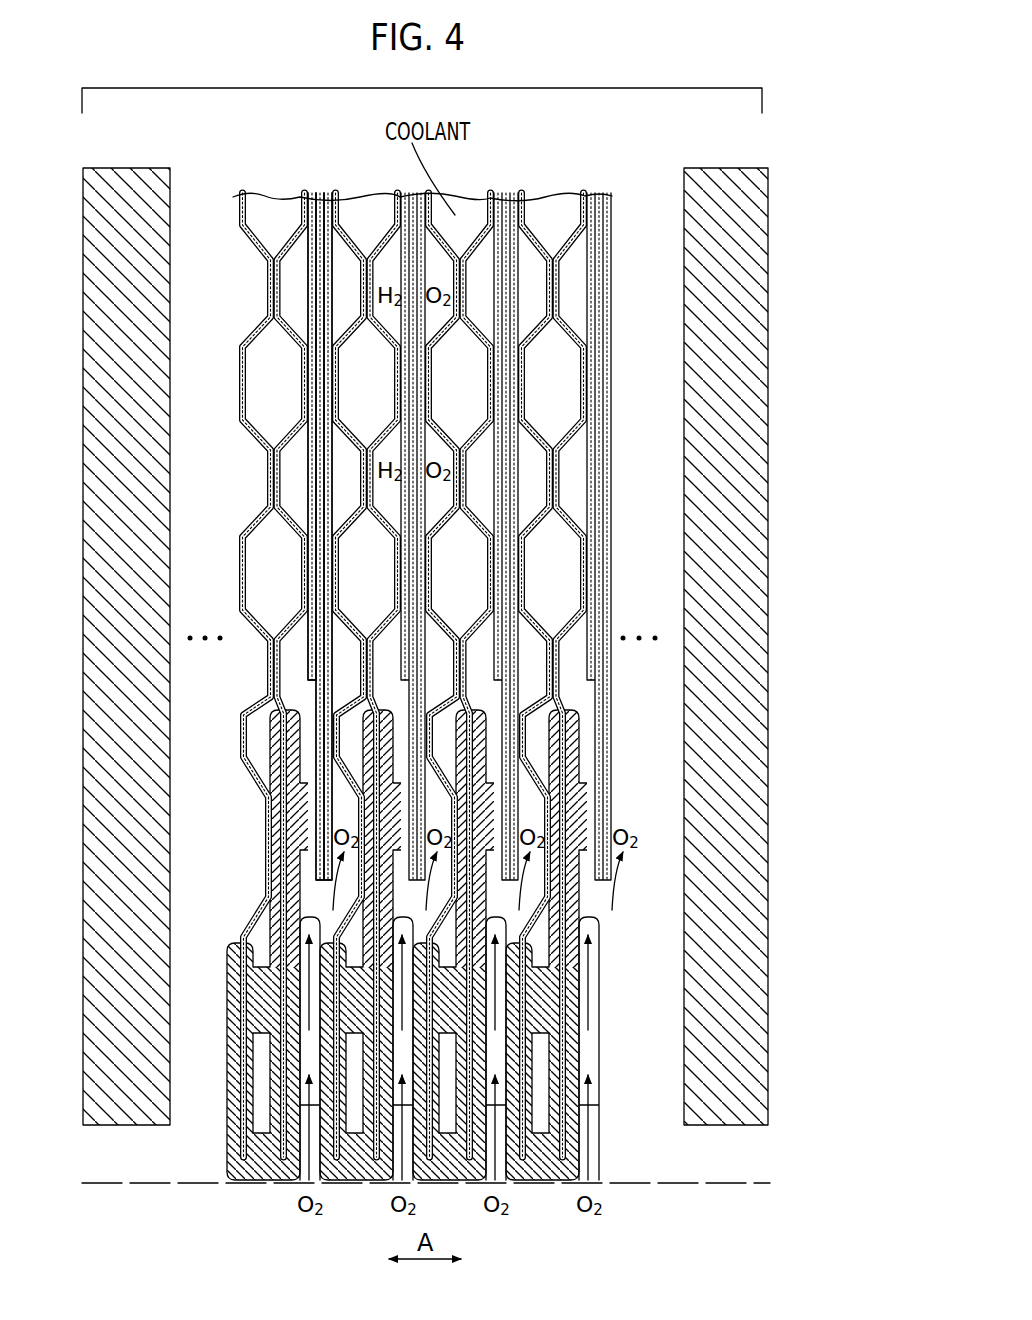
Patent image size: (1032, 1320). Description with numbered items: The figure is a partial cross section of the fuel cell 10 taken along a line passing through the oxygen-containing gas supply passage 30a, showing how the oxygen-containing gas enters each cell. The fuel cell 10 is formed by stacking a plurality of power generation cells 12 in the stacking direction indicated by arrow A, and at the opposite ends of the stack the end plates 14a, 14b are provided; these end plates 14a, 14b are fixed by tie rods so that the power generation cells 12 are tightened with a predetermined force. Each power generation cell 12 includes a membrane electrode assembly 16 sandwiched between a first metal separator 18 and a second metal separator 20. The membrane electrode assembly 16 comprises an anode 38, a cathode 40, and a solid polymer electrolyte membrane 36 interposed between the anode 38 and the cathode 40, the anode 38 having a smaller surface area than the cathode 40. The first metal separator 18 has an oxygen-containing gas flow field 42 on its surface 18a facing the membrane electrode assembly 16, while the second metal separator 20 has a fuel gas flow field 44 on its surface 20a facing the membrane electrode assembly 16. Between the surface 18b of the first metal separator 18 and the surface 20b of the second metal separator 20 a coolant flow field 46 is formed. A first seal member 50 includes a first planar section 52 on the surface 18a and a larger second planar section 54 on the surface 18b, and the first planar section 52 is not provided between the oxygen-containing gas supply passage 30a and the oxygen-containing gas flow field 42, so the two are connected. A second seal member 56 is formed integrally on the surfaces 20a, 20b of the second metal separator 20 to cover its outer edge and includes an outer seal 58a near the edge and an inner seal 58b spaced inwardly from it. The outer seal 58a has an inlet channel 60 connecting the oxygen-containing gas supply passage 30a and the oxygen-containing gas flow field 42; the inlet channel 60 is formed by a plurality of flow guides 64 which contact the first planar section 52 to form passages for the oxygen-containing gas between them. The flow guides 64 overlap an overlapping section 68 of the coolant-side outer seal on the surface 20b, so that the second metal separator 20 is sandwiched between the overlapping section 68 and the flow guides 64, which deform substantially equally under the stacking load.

The fuel cell 10 is at (206, 131).
The power generation cell 12 is at (501, 189).
The end plate 14a is at (143, 1127).
The end plate 14b is at (700, 1127).
The membrane electrode assembly 16 is at (358, 142).
The first metal separator 18 is at (420, 381).
The surface of first metal separator 18a is at (350, 424).
The surface of first metal separator 18b is at (336, 374).
The second metal separator 20 is at (300, 220).
The surface of second metal separator 20a is at (313, 396).
The surface of second metal separator 20b is at (305, 372).
The oxygen-containing gas supply passage 30a is at (622, 1184).
The solid polymer electrolyte membrane 36 is at (320, 194).
The anode 38 is at (311, 194).
The cathode 40 is at (328, 194).
The oxygen-containing gas flow field 42 is at (344, 308).
The fuel gas flow field 44 is at (292, 308).
The coolant flow field 46 is at (505, 481).
The first seal member 50 is at (225, 1068).
The first planar section 52 is at (585, 1100).
The second planar section 54 is at (550, 1050).
The second seal member 56 is at (568, 1190).
The outer seal 58a is at (640, 1016).
The inner seal 58b is at (601, 812).
The inlet channel 60 is at (606, 960).
The flow guides 64 is at (592, 990).
The overlapping section 68 is at (258, 1002).